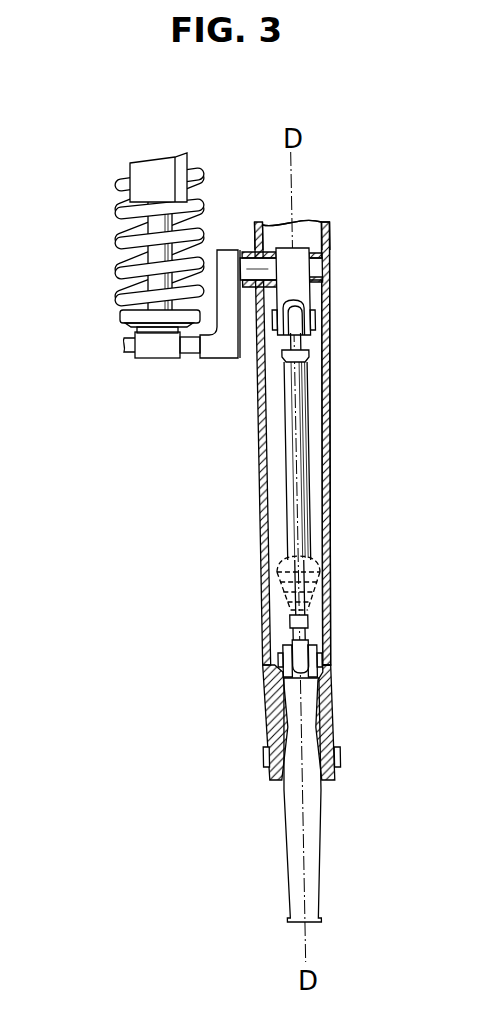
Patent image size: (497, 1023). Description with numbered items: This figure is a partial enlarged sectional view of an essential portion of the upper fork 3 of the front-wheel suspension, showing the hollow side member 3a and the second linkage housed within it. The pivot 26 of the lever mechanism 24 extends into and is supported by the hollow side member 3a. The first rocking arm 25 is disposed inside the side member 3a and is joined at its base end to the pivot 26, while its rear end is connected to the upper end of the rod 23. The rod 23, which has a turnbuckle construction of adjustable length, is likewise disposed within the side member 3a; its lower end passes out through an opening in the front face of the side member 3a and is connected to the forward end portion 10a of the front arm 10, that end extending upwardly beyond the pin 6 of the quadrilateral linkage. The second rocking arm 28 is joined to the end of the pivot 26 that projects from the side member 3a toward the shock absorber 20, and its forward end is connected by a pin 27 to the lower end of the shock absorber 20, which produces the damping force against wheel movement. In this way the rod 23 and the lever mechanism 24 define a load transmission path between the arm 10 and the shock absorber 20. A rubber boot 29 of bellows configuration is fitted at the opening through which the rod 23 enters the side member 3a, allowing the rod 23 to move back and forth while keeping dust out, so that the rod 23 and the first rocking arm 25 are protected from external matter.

The upper fork 3 is at (262, 487).
The side member 3a is at (332, 453).
The pin 6 is at (342, 757).
The front arm 10 is at (316, 837).
The end of front arm 10a is at (281, 655).
The shock absorber 20 is at (130, 173).
The rod 23 is at (303, 503).
The lever mechanism 24 is at (304, 239).
The first rocking arm 25 is at (302, 297).
The pivot 26 is at (313, 268).
The pin 27 is at (128, 352).
The second rocking arm 28 is at (223, 348).
The rubber boot 29 is at (313, 582).